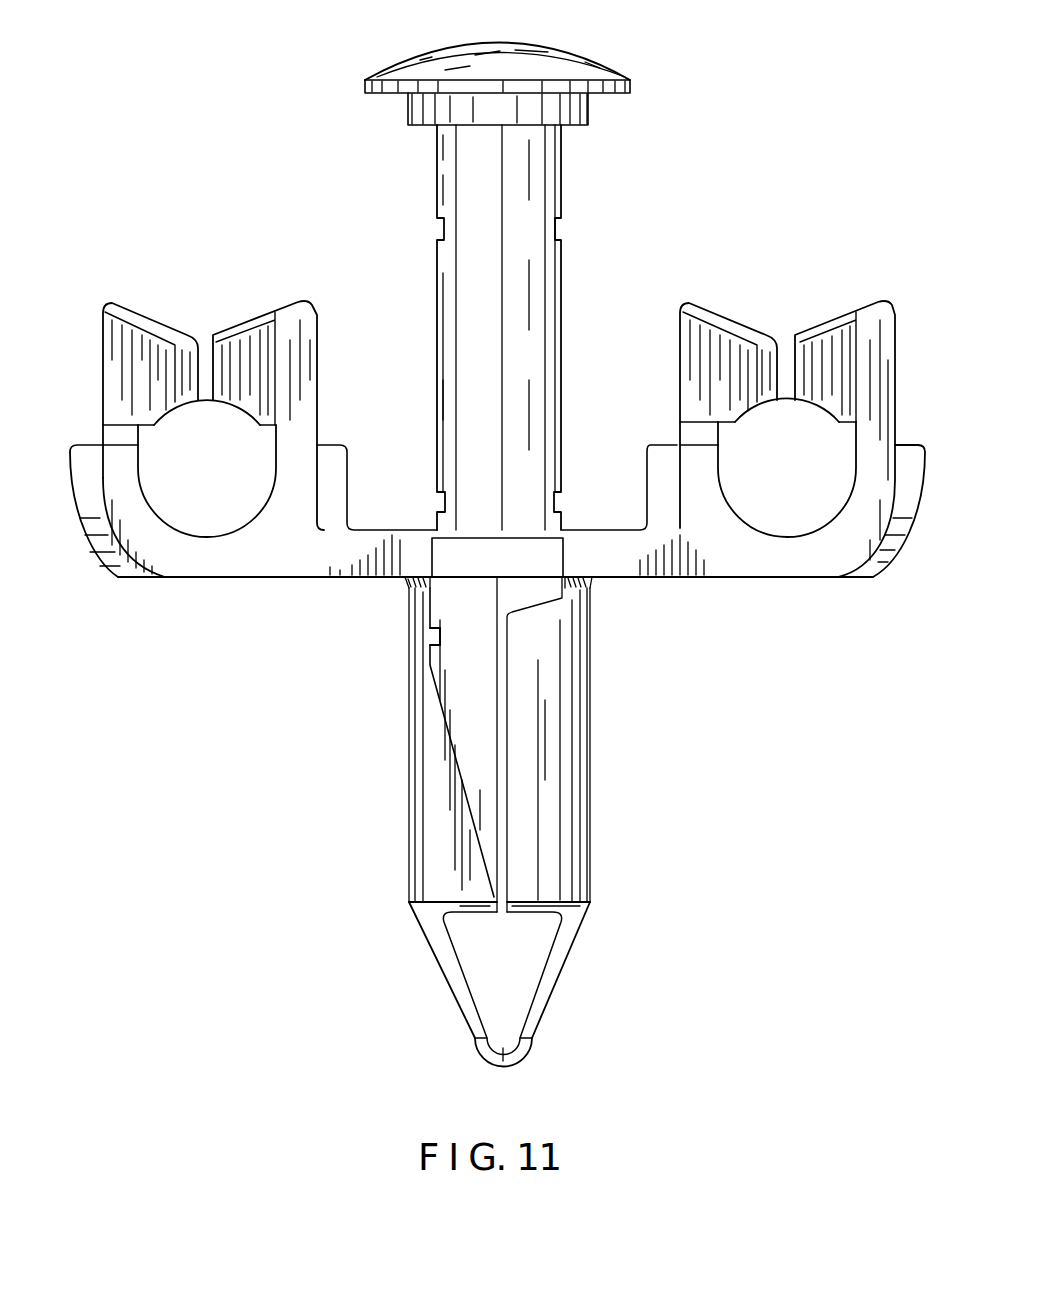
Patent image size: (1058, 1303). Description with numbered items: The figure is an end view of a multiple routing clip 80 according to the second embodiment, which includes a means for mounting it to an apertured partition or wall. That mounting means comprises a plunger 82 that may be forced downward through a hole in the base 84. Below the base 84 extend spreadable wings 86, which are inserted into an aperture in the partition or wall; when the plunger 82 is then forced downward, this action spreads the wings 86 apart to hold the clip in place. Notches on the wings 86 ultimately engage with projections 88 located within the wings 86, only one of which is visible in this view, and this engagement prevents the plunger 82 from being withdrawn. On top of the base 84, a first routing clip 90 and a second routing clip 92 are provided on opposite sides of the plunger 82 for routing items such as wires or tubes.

The multiple routing clip 80 is at (326, 72).
The plunger 82 is at (568, 63).
The base 84 is at (607, 567).
The spreadable wings 86 is at (437, 229).
The projection 88 is at (430, 634).
The first routing clip 90 is at (302, 425).
The second routing clip 92 is at (877, 388).